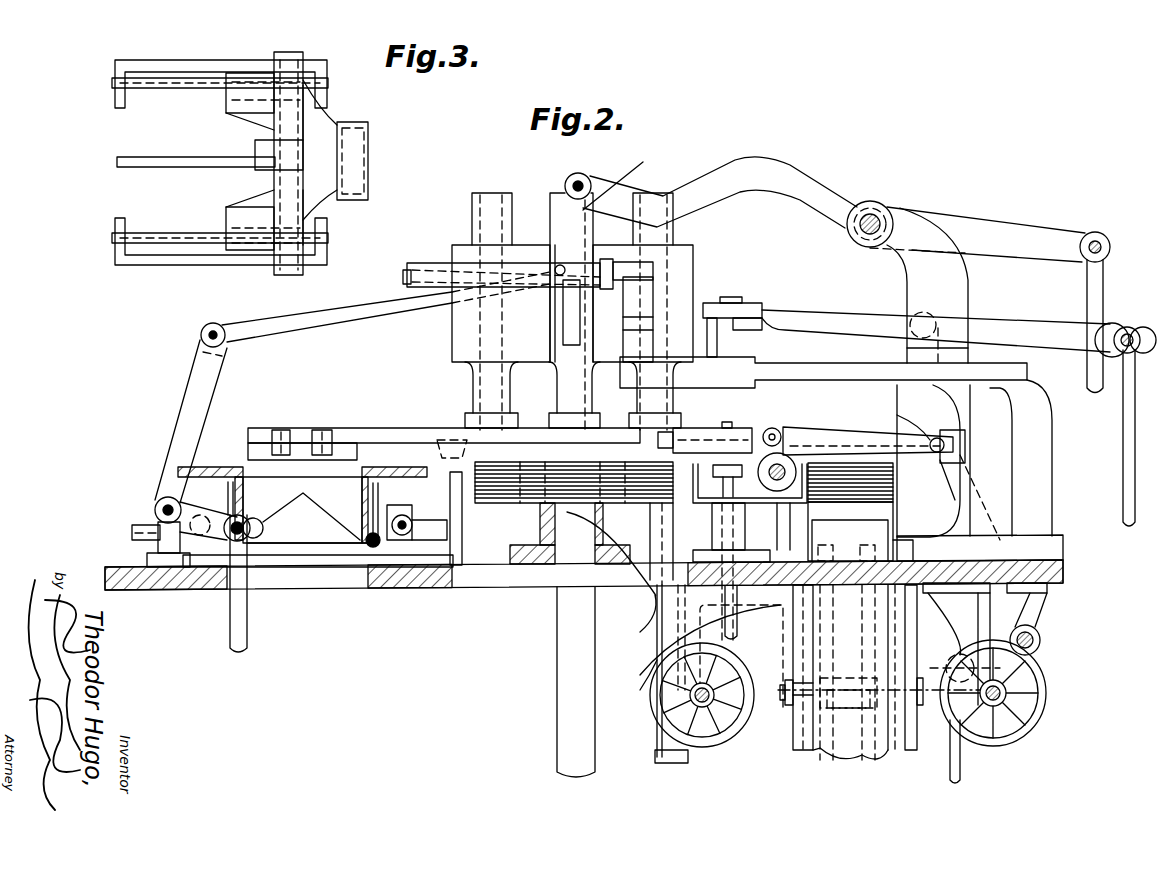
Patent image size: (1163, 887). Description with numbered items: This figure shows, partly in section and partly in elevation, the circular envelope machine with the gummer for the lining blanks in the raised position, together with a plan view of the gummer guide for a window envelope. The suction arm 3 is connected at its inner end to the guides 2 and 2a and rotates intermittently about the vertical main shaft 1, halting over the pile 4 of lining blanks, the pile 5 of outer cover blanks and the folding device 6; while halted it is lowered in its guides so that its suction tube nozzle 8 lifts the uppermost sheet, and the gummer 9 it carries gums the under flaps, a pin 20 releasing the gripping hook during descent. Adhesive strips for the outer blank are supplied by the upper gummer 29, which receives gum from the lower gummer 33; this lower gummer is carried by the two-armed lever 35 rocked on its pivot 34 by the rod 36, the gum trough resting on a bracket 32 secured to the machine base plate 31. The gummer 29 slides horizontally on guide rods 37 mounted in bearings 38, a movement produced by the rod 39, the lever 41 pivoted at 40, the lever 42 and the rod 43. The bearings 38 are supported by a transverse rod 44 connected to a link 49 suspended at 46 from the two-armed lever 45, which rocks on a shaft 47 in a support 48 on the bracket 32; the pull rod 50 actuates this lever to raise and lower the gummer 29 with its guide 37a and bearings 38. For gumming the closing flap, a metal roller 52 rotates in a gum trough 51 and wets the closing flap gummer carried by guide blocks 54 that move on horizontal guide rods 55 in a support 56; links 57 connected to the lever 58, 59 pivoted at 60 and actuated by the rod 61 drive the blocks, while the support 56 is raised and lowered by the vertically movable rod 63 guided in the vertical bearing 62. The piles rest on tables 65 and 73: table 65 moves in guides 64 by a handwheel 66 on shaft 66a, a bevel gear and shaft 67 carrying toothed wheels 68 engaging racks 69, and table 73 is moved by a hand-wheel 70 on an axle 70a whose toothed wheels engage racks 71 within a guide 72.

In FIG. 2, the vertical main shaft 1 is at (556, 655).
In FIG. 2, the guide 2 is at (508, 400).
In FIG. 2, the guide 2a is at (488, 200).
In FIG. 2, the suction arm 3 is at (402, 428).
In FIG. 2, the pile of lining blanks 4 is at (882, 490).
In FIG. 2, the pile of outer cover blanks 5 is at (507, 503).
In FIG. 2, the folding device 6 is at (308, 530).
In FIG. 2, the suction tube nozzle 8 is at (320, 428).
In FIG. 2, the gummer 9 is at (348, 440).
In FIG. 2, the pin 20 is at (462, 525).
In FIG. 3, the gummer 29 is at (360, 128).
In FIG. 2, the gummer 29 is at (640, 337).
In FIG. 2, the machine base plate 31 is at (412, 578).
In FIG. 2, the bracket 32 is at (1020, 463).
In FIG. 2, the lower gummer 33 is at (720, 340).
In FIG. 2, the pivot 34 is at (935, 322).
In FIG. 2, the two-armed lever 35 is at (820, 315).
In FIG. 2, the rod 36 is at (1130, 423).
In FIG. 3, the guide rod 37 is at (172, 90).
In FIG. 2, the guide rod 37 is at (405, 270).
In FIG. 3, the guide 37a is at (240, 80).
In FIG. 3, the bearing 38 is at (150, 64).
In FIG. 2, the bearing 38 is at (438, 266).
In FIG. 3, the rod 39 is at (165, 160).
In FIG. 2, the rod 39 is at (312, 312).
In FIG. 2, the pivot 40 is at (155, 508).
In FIG. 2, the lever 41 is at (190, 385).
In FIG. 2, the lever 42 is at (237, 522).
In FIG. 2, the rod 43 is at (248, 628).
In FIG. 3, the transverse rod 44 is at (295, 128).
In FIG. 2, the two-armed lever 45 is at (745, 162).
In FIG. 2, the suspension point 46 is at (590, 180).
In FIG. 2, the shaft 47 is at (880, 215).
In FIG. 2, the support 48 is at (912, 228).
In FIG. 2, the link 49 is at (620, 173).
In FIG. 2, the pull rod 50 is at (1102, 292).
In FIG. 2, the gum trough 51 is at (712, 495).
In FIG. 2, the metal roller 52 is at (768, 480).
In FIG. 2, the guide block 54 is at (695, 440).
In FIG. 2, the horizontal guide rod 55 is at (835, 440).
In FIG. 2, the support 56 is at (690, 498).
In FIG. 2, the link 57 is at (782, 430).
In FIG. 2, the lever 58 is at (948, 498).
In FIG. 2, the lever 59 is at (1010, 666).
In FIG. 2, the pivot 60 is at (1042, 640).
In FIG. 2, the rod 61 is at (962, 770).
In FIG. 2, the vertical bearing 62 is at (740, 525).
In FIG. 2, the vertically movable rod 63 is at (742, 632).
In FIG. 2, the guide 64 is at (797, 657).
In FIG. 2, the table 65 is at (860, 531).
In FIG. 2, the handwheel 66 is at (1048, 698).
In FIG. 2, the shaft 66a is at (1000, 705).
In FIG. 2, the shaft 67 is at (785, 710).
In FIG. 2, the toothed wheel 68 is at (832, 707).
In FIG. 2, the rack 69 is at (867, 710).
In FIG. 2, the hand-wheel 70 is at (728, 737).
In FIG. 2, the axle 70a is at (702, 707).
In FIG. 2, the rack 71 is at (693, 640).
In FIG. 2, the guide 72 is at (627, 682).
In FIG. 2, the table 73 is at (611, 572).